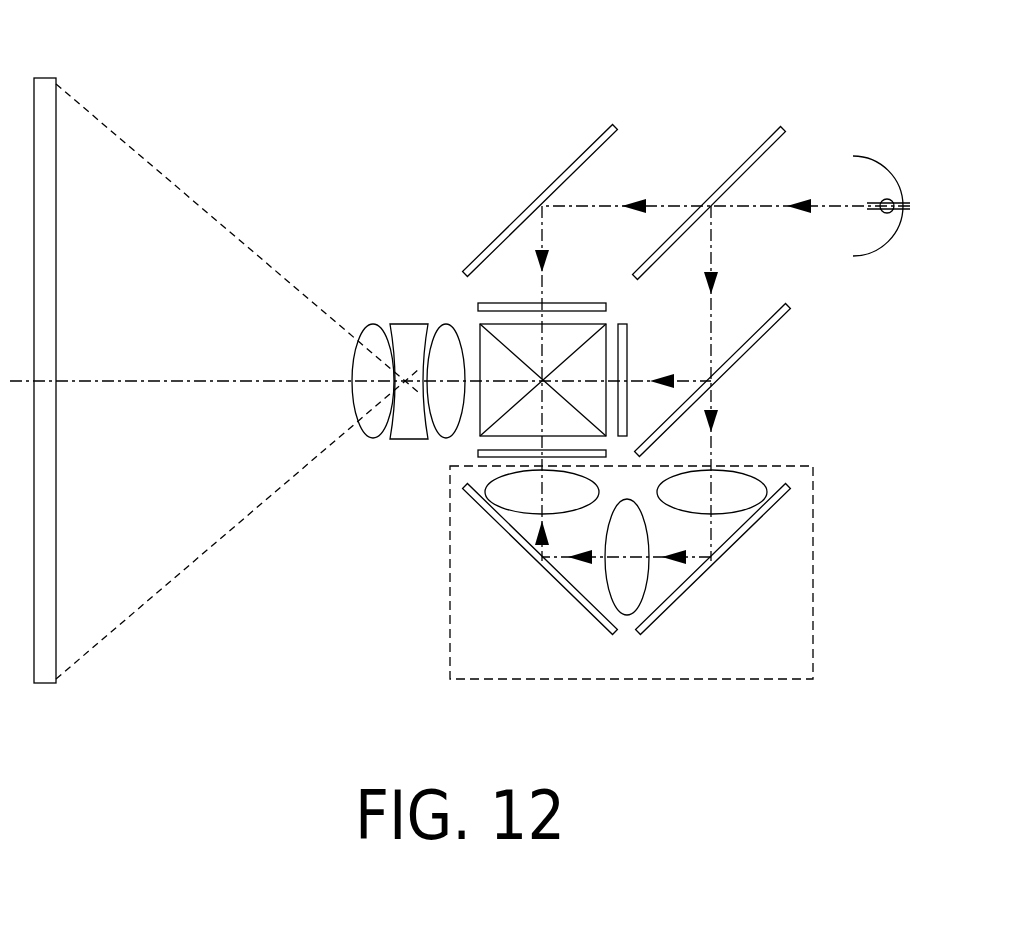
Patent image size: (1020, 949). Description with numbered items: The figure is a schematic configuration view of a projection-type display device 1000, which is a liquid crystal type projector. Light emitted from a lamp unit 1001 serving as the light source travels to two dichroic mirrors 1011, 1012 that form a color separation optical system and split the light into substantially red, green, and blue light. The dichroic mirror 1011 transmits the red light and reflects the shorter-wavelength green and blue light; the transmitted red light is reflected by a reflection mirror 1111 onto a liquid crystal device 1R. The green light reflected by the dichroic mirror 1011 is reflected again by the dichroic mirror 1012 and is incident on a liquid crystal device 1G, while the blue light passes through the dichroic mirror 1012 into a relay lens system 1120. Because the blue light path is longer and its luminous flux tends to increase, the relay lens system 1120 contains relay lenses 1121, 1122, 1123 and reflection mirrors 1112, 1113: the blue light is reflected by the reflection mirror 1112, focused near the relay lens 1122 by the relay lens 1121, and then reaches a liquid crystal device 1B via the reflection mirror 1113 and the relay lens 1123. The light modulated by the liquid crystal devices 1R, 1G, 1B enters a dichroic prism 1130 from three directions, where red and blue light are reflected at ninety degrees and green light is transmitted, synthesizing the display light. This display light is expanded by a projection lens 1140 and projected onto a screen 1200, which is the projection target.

The projection-type display device 1000 is at (693, 40).
The lamp unit 1001 is at (884, 200).
The dichroic mirror 1011 is at (750, 160).
The dichroic mirror 1012 is at (748, 350).
The reflection mirror 1111 is at (582, 160).
The reflection mirror 1112 is at (660, 612).
The reflection mirror 1113 is at (588, 612).
The relay lens system 1120 is at (813, 526).
The relay lens 1121 is at (735, 505).
The relay lens 1122 is at (636, 598).
The relay lens 1123 is at (513, 502).
The dichroic prism 1130 is at (497, 303).
The projection lens 1140 is at (465, 311).
The screen 1200 is at (57, 668).
The liquid crystal device 1R is at (517, 303).
The liquid crystal device 1G is at (628, 348).
The liquid crystal device 1B is at (478, 455).